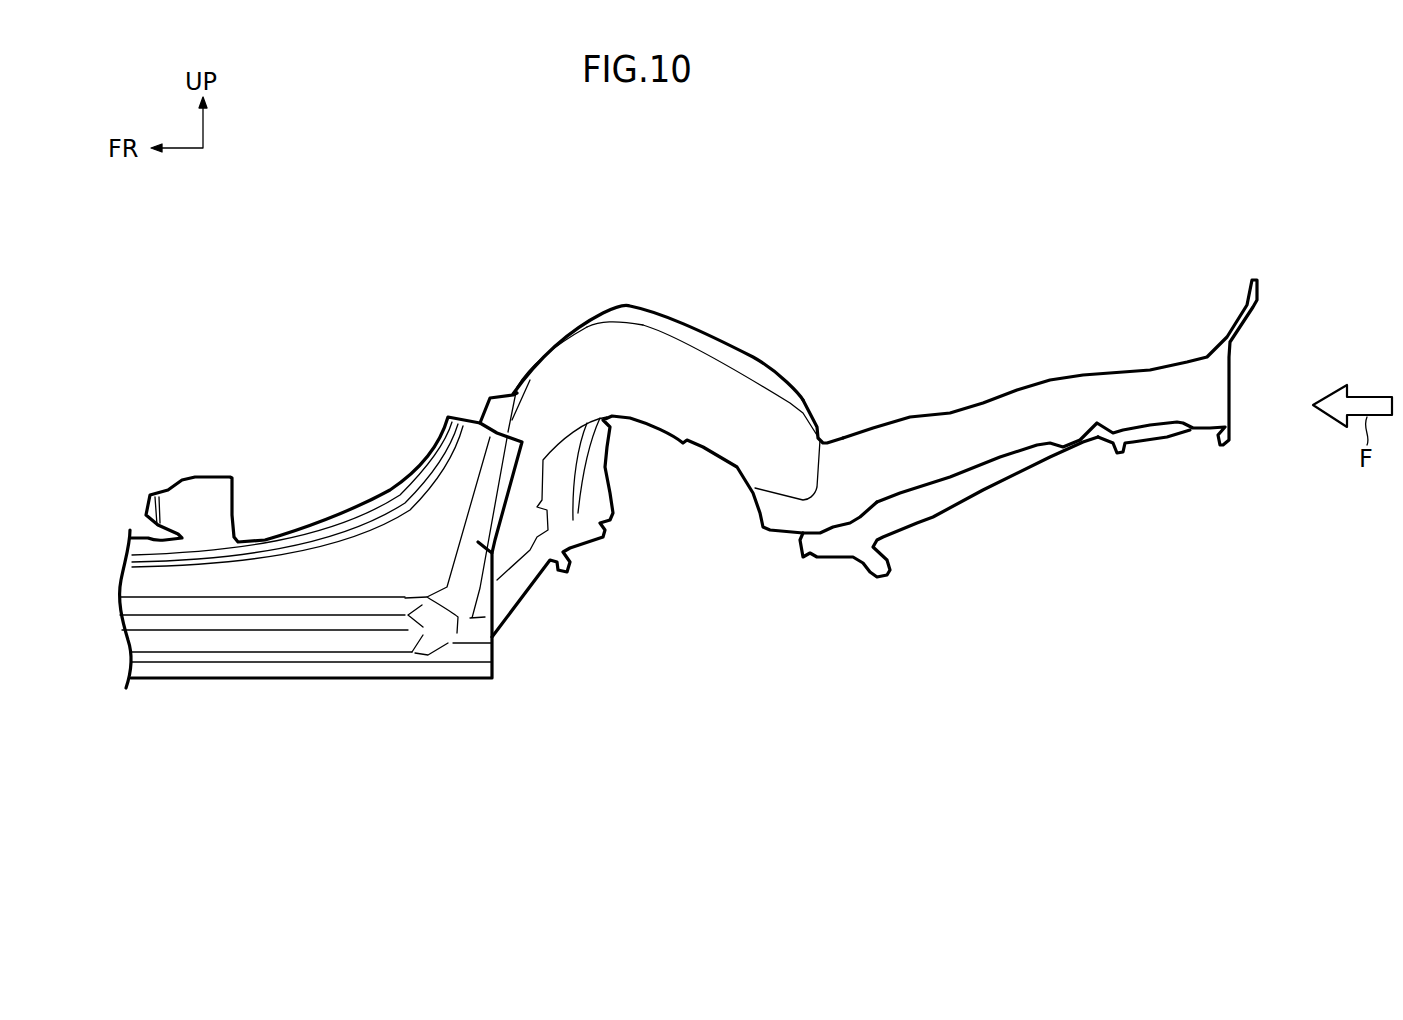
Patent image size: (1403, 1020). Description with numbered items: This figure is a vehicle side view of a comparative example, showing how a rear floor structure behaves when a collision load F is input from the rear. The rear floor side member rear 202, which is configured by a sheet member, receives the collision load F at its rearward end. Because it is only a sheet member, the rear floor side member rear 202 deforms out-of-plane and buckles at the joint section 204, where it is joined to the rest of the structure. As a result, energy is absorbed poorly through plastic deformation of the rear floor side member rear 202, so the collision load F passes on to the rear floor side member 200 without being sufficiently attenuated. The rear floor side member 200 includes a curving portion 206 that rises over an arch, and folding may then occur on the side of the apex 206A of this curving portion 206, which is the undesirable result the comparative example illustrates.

The rear floor side member 200 is at (710, 311).
The rear floor side member rear 202 is at (1067, 350).
The joint section 204 is at (838, 415).
The curving portion 206 is at (563, 365).
The apex 206A is at (622, 316).